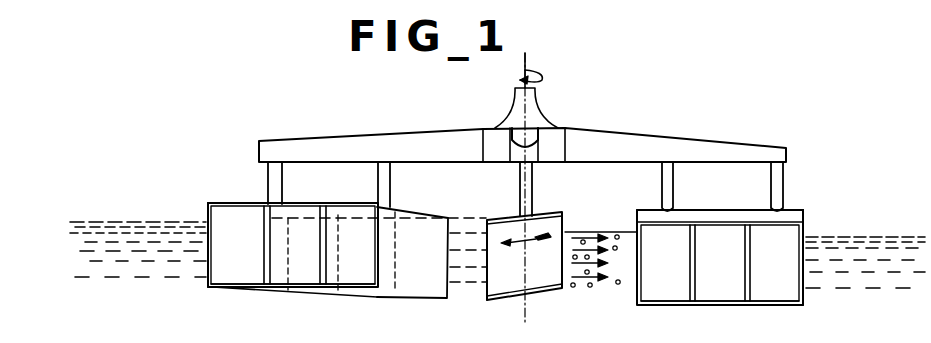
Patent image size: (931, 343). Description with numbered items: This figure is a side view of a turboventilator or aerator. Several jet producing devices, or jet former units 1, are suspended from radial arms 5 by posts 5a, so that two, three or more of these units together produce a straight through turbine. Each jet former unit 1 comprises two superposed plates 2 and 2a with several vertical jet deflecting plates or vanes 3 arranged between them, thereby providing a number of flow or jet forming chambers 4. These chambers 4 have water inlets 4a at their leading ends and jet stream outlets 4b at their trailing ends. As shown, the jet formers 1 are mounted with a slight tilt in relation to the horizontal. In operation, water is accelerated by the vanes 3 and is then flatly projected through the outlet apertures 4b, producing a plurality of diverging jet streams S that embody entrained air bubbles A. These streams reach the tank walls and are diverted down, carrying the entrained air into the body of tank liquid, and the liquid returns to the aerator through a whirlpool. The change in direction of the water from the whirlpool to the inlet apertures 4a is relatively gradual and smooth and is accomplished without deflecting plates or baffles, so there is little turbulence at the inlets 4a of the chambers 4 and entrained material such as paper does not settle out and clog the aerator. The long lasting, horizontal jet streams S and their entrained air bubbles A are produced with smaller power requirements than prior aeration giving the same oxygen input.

The jet producing unit 1 is at (207, 209).
The superposed plate 2 is at (244, 206).
The superposed plate 2a is at (397, 292).
The vertical jet deflecting vane 3 is at (375, 244).
The jet forming chamber 4 is at (330, 282).
The water inlet 4a is at (214, 276).
The jet stream outlet 4b is at (453, 215).
The radial arm 5 is at (512, 136).
The post 5a is at (376, 182).
The entrained air bubbles A is at (620, 238).
The jet stream S is at (600, 289).